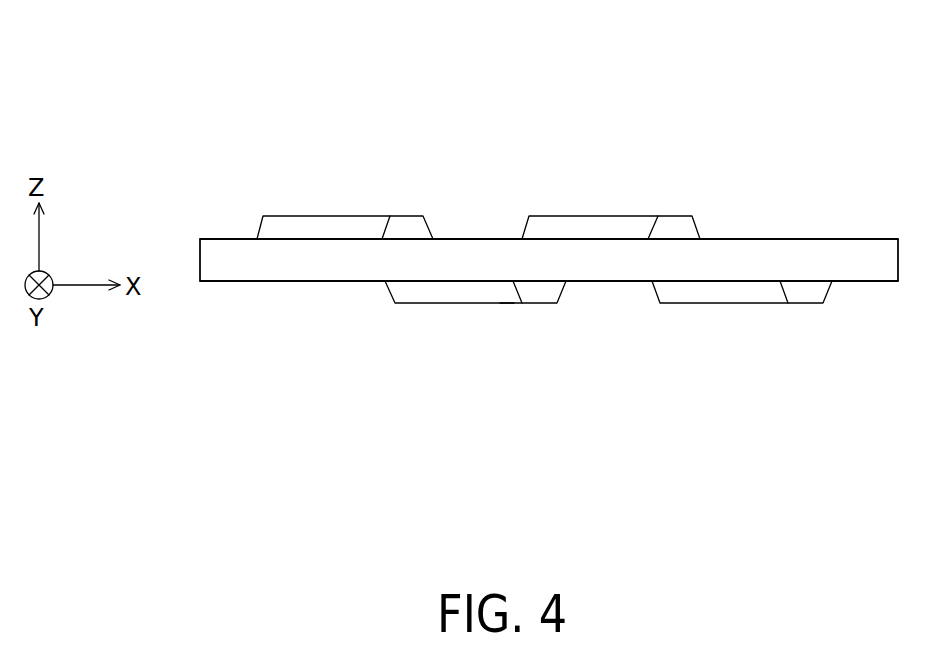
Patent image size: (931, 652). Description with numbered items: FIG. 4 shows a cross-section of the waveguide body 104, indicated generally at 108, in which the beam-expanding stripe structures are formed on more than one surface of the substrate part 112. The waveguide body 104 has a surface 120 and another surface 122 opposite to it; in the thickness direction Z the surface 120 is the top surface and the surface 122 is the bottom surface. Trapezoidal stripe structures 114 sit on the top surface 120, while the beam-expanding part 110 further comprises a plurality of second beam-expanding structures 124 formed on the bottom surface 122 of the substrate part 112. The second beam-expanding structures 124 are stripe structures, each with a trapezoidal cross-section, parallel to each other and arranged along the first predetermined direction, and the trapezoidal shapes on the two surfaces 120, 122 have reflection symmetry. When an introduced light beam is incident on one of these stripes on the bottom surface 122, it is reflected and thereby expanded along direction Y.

The waveguide body 104 is at (220, 250).
The circuit assembly 108 is at (758, 90).
The beam-expanding part 110 is at (507, 216).
The substrate part 112 is at (270, 273).
The upper conductive pad 114 is at (343, 220).
The surface 120 is at (742, 239).
The another surface 122 is at (612, 282).
The second beam-expanding structures 124 is at (460, 294).